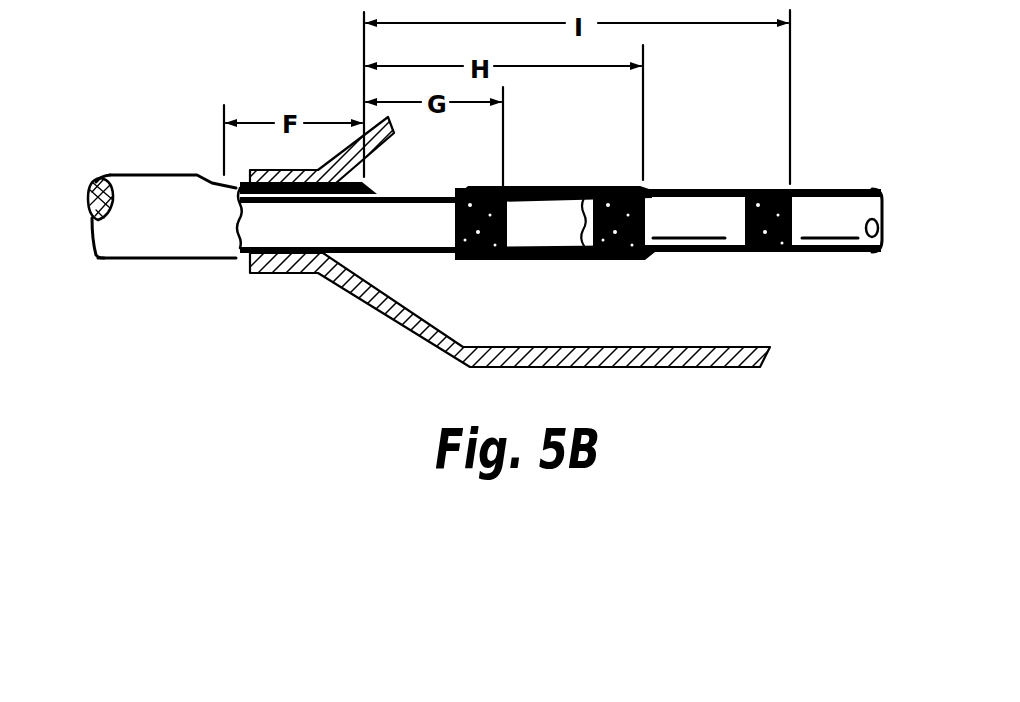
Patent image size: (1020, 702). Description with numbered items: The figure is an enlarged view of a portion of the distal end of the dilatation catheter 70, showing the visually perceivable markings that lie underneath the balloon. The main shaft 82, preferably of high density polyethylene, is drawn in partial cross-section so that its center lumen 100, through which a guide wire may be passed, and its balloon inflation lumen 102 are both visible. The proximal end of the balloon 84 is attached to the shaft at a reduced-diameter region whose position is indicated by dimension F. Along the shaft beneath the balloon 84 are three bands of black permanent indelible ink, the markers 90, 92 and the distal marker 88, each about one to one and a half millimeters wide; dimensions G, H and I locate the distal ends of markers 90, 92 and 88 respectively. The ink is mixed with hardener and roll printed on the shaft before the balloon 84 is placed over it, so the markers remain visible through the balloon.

The catheter 70 is at (212, 58).
The main shaft 82 is at (147, 262).
The balloon 84 is at (393, 318).
The distal marker 88 is at (768, 253).
The marker 90 is at (482, 262).
The marker 92 is at (620, 258).
The center lumen 100 is at (372, 240).
The balloon inflation lumen 102 is at (88, 191).